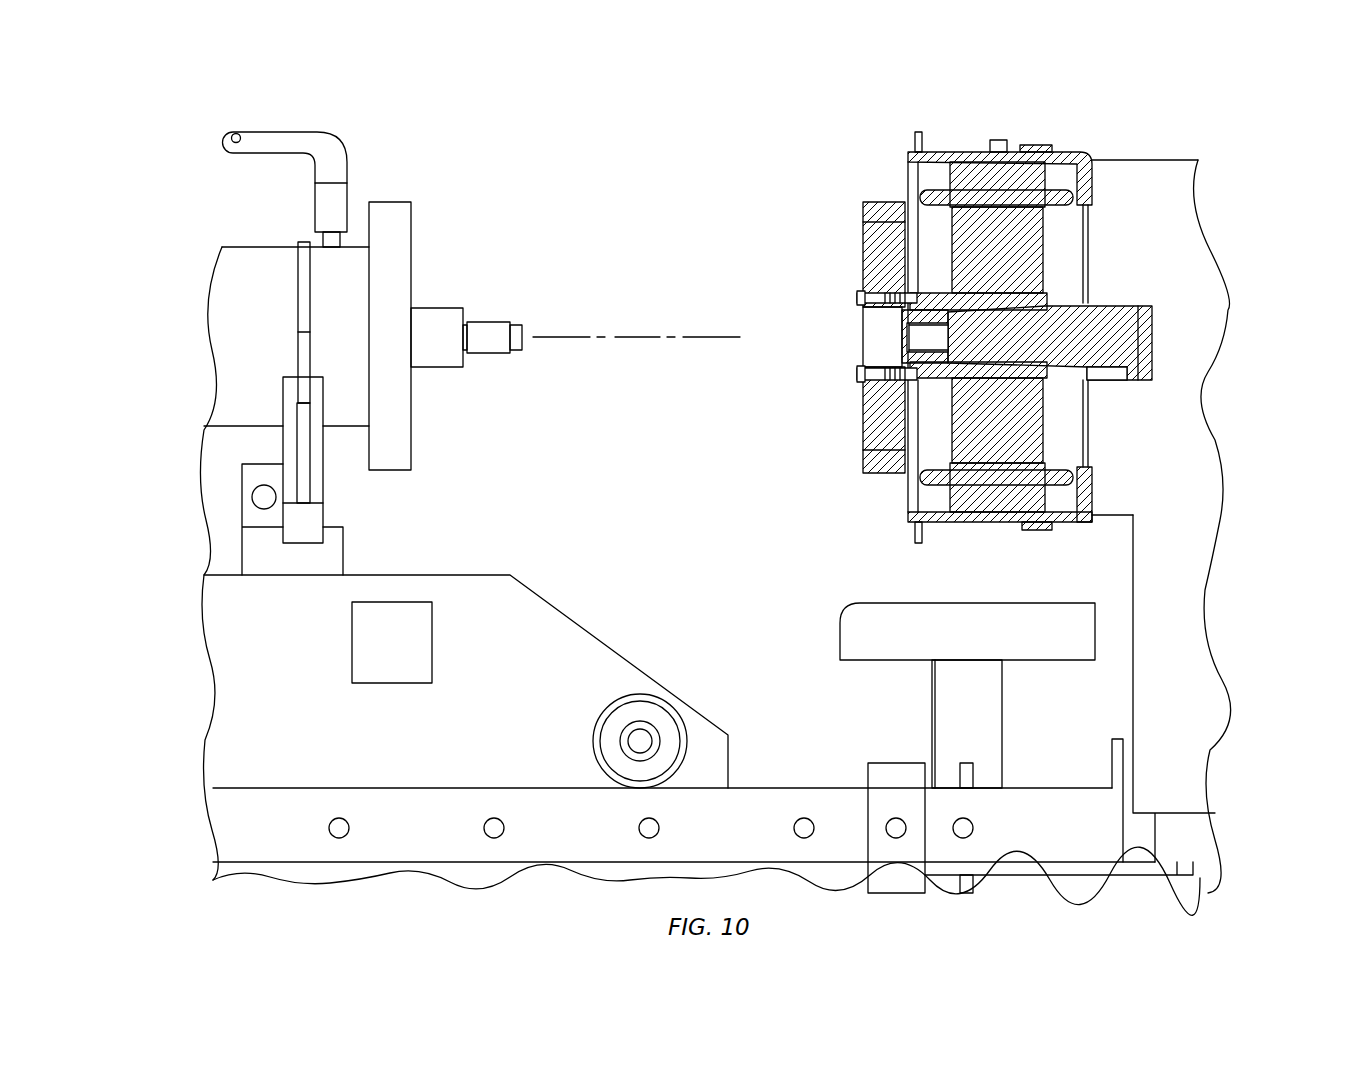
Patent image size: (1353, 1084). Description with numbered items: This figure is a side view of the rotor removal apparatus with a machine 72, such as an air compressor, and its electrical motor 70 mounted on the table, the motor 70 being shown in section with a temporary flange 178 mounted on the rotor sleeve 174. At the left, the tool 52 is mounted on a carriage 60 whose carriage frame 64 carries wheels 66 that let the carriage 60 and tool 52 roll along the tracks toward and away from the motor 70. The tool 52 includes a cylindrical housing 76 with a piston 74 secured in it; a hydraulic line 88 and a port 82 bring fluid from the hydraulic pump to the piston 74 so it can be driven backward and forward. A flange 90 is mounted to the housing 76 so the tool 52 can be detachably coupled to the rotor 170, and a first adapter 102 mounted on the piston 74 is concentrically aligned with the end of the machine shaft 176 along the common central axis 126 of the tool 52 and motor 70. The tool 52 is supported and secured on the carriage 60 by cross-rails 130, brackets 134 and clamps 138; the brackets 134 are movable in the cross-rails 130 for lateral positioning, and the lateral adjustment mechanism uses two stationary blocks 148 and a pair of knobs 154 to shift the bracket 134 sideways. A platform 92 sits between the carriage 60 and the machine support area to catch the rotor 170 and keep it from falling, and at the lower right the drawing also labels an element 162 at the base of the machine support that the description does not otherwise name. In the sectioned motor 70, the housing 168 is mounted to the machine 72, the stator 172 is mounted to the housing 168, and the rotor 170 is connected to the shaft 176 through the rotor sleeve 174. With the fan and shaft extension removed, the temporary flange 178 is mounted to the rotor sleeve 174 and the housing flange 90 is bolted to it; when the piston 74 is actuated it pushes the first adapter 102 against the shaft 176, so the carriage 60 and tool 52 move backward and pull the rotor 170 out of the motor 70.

The tool 52 is at (468, 317).
The carriage 60 is at (702, 745).
The carriage frame 64 is at (400, 741).
The wheels 66 is at (592, 730).
The electrical motor 70 is at (988, 340).
The machine 72 is at (1237, 236).
The piston 74 is at (435, 308).
The cylindrical housing 76 is at (270, 337).
The port 82 is at (315, 207).
The hydraulic line 88 is at (262, 128).
The flange 90 is at (393, 201).
The platform 92 is at (898, 662).
The first adapter 102 is at (490, 321).
The central axis 126 is at (635, 337).
The cross-rails 130 is at (343, 553).
The brackets 134 is at (336, 478).
The clamps 138 is at (297, 272).
The stationary blocks 148 is at (253, 515).
The knobs 154 is at (260, 495).
The base plate 162 is at (1183, 830).
The housing 168 is at (957, 152).
The rotor 170 is at (1013, 438).
The stator 172 is at (993, 500).
The rotor sleeve 174 is at (937, 380).
The shaft 176 is at (1110, 317).
The temporary flange 178 is at (863, 252).